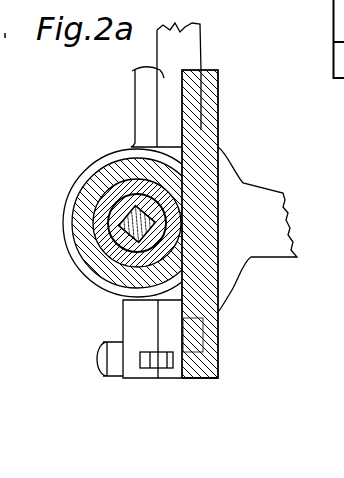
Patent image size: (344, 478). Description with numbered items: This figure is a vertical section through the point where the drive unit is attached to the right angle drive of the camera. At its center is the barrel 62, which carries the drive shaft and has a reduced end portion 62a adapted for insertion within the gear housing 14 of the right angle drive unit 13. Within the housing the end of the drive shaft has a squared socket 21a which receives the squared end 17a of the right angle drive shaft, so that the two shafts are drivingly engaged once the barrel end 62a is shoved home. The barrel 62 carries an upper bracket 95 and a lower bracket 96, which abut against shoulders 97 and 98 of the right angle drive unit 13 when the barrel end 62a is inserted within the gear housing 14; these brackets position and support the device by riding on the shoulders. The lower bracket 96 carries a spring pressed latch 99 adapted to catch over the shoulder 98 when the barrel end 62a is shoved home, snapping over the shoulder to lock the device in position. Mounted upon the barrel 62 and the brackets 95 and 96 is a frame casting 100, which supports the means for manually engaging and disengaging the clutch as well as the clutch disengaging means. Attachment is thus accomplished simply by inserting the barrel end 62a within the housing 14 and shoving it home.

The right angle drive unit 13 is at (218, 123).
The gear housing 14 is at (80, 220).
The squared end 17a is at (115, 203).
The squared socket 21a is at (126, 237).
The barrel 62 is at (67, 251).
The reduced end portion 62a is at (118, 188).
The upper bracket 95 is at (136, 97).
The lower bracket 96 is at (83, 318).
The shoulder 97 is at (134, 69).
The shoulder 98 is at (177, 330).
The spring pressed latch 99 is at (167, 362).
The frame casting 100 is at (251, 257).